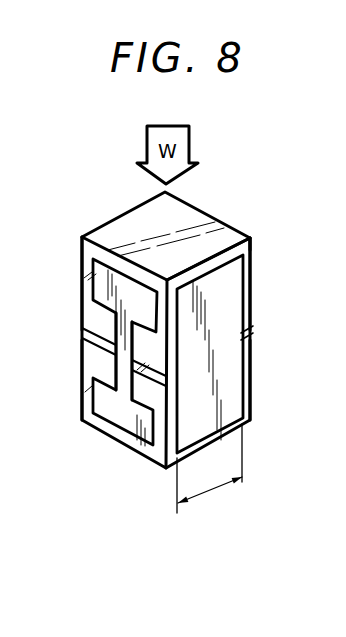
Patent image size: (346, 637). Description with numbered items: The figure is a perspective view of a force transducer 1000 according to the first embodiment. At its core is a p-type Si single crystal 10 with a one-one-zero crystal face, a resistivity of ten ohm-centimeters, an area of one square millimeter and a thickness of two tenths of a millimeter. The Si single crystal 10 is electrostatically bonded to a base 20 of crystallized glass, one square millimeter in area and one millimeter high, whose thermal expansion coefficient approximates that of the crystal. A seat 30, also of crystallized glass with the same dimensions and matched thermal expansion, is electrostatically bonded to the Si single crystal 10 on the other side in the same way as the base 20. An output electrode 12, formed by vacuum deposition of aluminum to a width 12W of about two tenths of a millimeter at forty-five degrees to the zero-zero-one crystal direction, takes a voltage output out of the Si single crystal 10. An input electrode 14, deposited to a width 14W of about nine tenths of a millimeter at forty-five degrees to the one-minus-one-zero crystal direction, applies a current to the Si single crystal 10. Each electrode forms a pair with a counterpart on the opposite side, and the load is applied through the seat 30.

The force transducer 1000 is at (70, 259).
The Si single crystal 10 is at (248, 332).
The base 20 is at (247, 392).
The seat 30 is at (250, 273).
The output electrode 12 is at (137, 425).
The width of output electrode 12W is at (147, 380).
The input electrode 14 is at (216, 311).
The width of input electrode 14W is at (213, 487).